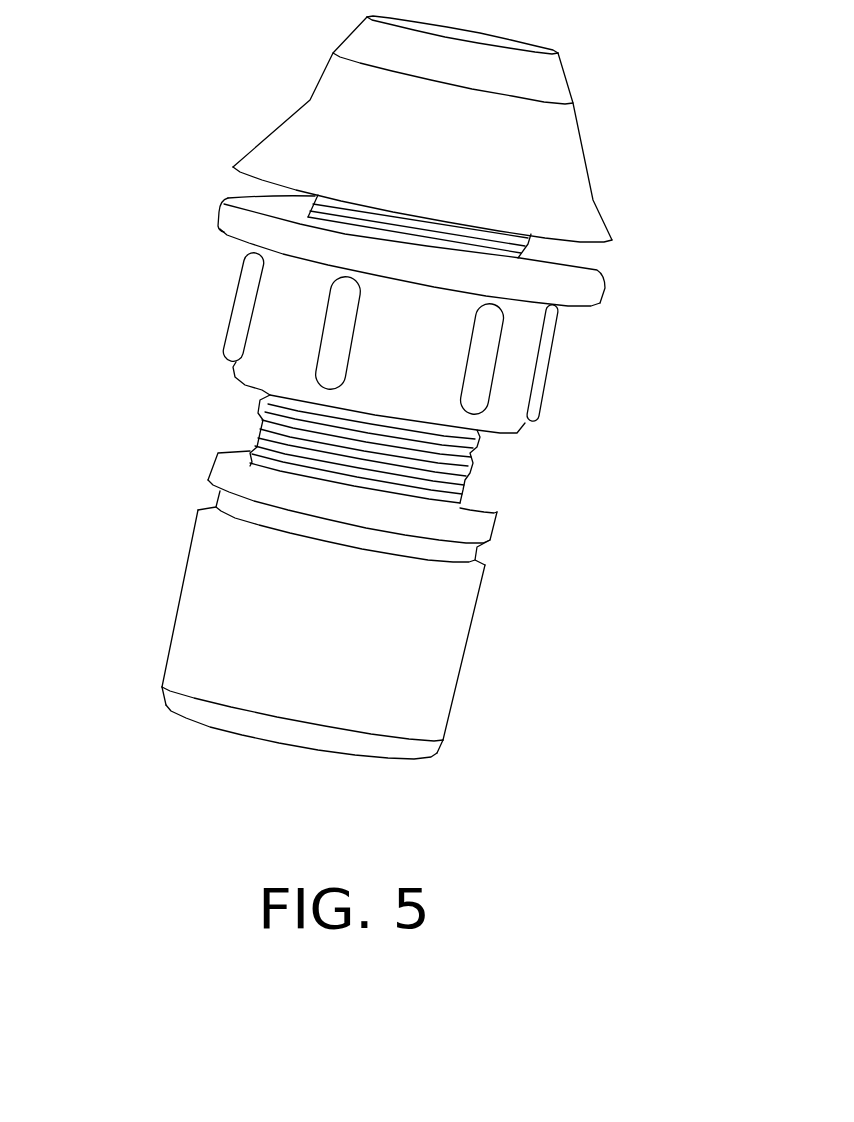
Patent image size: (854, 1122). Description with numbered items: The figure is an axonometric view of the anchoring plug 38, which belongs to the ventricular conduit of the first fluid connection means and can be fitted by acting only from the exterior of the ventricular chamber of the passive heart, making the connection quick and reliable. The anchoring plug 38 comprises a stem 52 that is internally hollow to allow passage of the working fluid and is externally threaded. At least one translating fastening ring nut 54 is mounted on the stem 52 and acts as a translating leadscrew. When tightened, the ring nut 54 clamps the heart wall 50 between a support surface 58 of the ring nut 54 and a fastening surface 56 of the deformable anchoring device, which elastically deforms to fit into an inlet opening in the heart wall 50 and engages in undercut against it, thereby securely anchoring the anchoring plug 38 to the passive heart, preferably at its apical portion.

The anchoring plug 38 is at (190, 196).
The heart wall 50 is at (553, 143).
The stem 52 is at (477, 472).
The translating fastening ring nut 54 is at (523, 363).
The fastening surface 56 is at (573, 265).
The support surface 58 is at (600, 245).